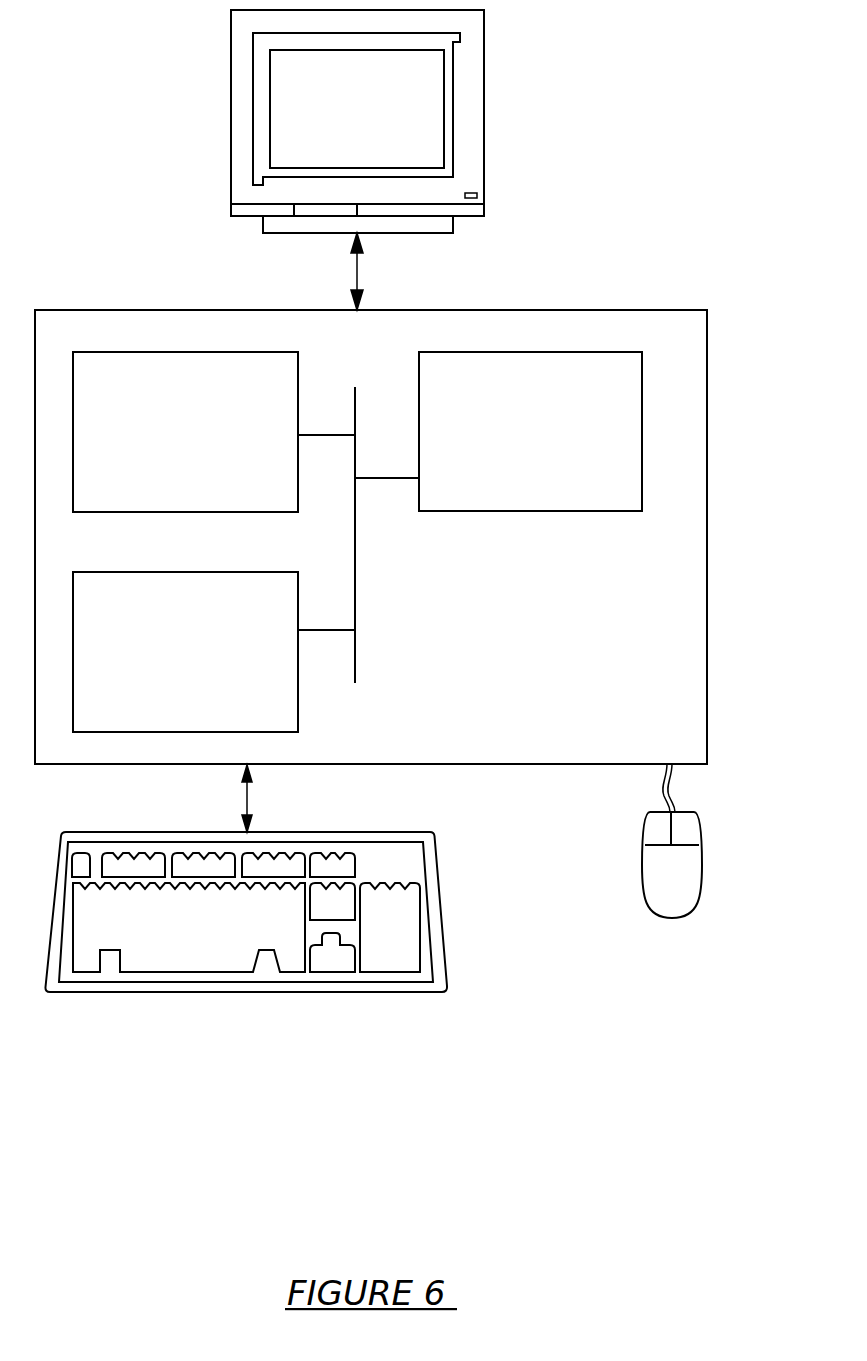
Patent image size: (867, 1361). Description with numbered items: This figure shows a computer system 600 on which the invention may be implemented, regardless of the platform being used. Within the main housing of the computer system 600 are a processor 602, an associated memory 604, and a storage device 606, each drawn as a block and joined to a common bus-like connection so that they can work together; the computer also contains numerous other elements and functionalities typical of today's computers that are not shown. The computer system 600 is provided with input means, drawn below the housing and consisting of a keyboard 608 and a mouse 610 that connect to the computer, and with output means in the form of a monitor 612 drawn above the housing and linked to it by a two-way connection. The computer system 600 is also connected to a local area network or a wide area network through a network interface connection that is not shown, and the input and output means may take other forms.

The computer system 600 is at (683, 182).
The processor 602 is at (530, 431).
The associated memory 604 is at (185, 432).
The storage device 606 is at (185, 652).
The keyboard 608 is at (246, 912).
The mouse 610 is at (672, 841).
The monitor 612 is at (357, 121).